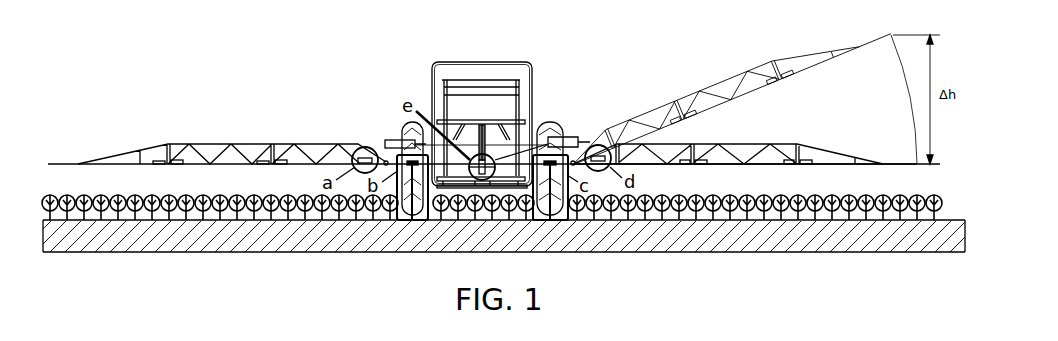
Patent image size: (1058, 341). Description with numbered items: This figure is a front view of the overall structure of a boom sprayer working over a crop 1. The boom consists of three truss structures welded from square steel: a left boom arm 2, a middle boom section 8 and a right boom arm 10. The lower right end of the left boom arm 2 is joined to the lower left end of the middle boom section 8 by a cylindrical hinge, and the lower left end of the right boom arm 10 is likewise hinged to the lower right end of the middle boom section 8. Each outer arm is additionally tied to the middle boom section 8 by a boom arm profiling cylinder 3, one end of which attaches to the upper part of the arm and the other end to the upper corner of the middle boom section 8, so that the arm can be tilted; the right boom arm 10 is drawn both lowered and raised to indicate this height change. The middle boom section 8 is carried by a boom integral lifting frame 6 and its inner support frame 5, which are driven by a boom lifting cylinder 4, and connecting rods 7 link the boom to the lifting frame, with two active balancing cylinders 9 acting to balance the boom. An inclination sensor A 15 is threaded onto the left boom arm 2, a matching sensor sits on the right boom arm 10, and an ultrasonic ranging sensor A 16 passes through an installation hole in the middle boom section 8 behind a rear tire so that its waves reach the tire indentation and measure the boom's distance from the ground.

The crop 1 is at (83, 197).
The left boom arm 2 is at (238, 158).
The boom arm profiling cylinder 3 is at (395, 141).
The boom lifting cylinder 4 is at (458, 143).
The inner support frame of boom integral lifting frame 5 is at (452, 84).
The boom integral lifting frame 6 is at (491, 123).
The connecting rod 7 is at (497, 122).
The middle boom section 8 is at (505, 155).
The active balancing cylinder 9 is at (530, 140).
The right boom arm 10 is at (763, 160).
The inclination sensor A 15 is at (353, 162).
The ultrasonic ranging sensor A 16 is at (385, 142).